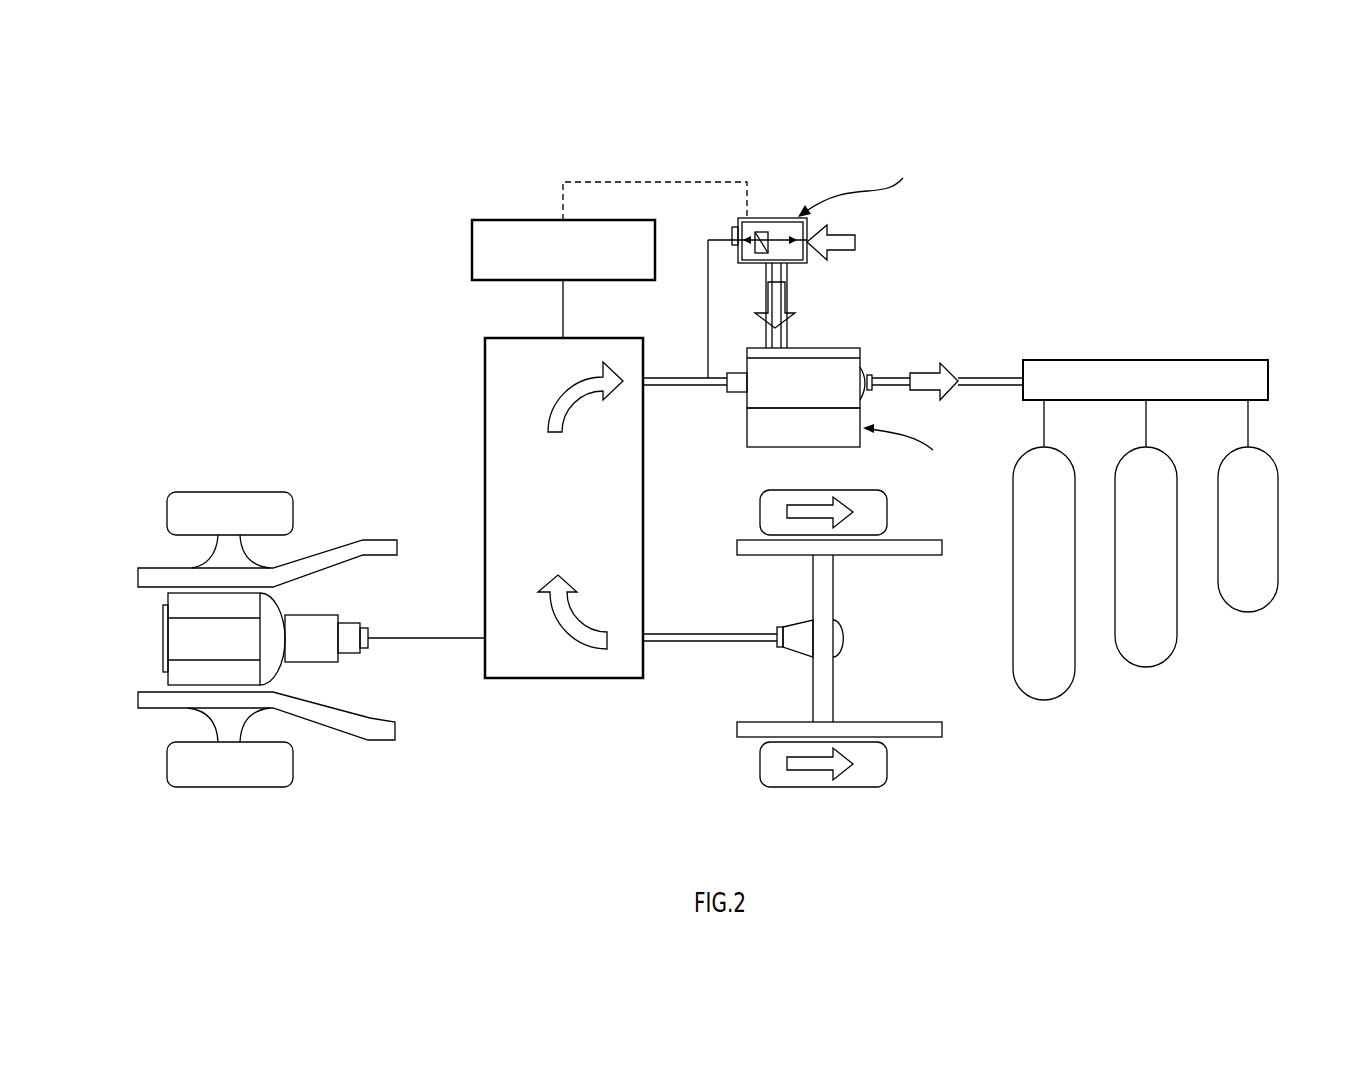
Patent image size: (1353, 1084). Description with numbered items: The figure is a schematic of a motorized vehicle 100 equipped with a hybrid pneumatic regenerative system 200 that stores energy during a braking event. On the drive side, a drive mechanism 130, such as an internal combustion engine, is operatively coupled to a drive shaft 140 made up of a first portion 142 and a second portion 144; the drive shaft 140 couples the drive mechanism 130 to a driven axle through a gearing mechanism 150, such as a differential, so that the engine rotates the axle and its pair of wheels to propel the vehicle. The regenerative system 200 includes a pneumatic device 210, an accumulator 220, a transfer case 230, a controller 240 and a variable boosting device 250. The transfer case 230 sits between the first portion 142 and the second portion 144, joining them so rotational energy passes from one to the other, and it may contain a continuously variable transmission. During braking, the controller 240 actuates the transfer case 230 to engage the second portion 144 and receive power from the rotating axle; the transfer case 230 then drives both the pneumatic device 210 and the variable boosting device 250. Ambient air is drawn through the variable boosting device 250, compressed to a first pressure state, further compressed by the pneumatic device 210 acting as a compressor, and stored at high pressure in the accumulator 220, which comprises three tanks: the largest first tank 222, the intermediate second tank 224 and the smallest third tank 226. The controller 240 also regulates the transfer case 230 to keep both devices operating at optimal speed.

The motorized vehicle 100 is at (173, 837).
The drive mechanism 130 is at (177, 643).
The drive shaft 140 is at (572, 649).
The first portion of drive shaft 142 is at (410, 640).
The second portion of drive shaft 144 is at (707, 643).
The gearing mechanism 150 is at (798, 635).
The hybrid pneumatic regenerative system 200 is at (1163, 188).
The pneumatic device 210 is at (747, 420).
The accumulator 220 is at (1268, 380).
The first tank 222 is at (1043, 700).
The second tank 224 is at (1145, 667).
The third tank 226 is at (1247, 612).
The transfer case 230 is at (485, 417).
The controller 240 is at (472, 253).
The variable boosting device 250 is at (755, 217).